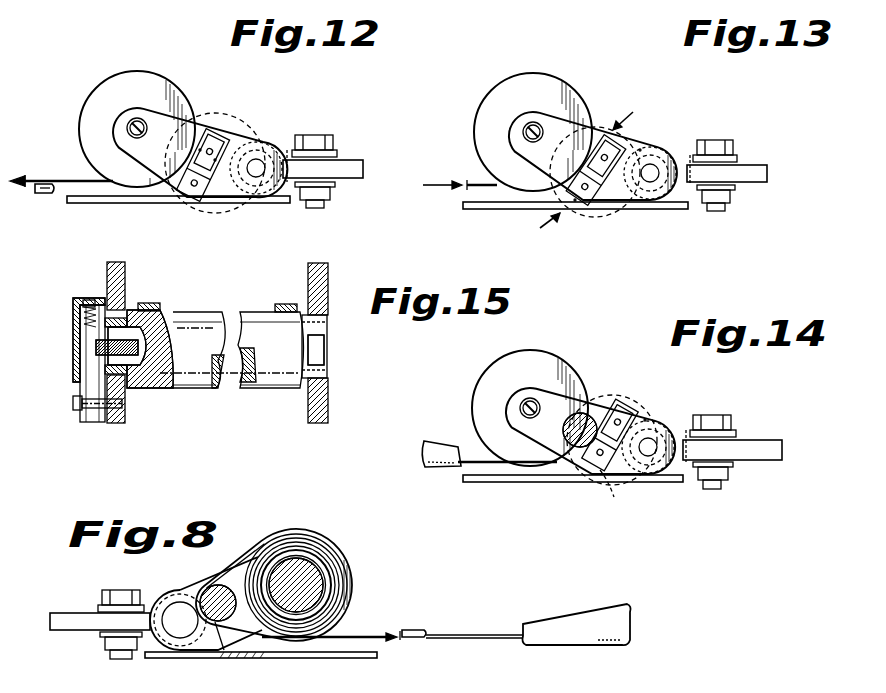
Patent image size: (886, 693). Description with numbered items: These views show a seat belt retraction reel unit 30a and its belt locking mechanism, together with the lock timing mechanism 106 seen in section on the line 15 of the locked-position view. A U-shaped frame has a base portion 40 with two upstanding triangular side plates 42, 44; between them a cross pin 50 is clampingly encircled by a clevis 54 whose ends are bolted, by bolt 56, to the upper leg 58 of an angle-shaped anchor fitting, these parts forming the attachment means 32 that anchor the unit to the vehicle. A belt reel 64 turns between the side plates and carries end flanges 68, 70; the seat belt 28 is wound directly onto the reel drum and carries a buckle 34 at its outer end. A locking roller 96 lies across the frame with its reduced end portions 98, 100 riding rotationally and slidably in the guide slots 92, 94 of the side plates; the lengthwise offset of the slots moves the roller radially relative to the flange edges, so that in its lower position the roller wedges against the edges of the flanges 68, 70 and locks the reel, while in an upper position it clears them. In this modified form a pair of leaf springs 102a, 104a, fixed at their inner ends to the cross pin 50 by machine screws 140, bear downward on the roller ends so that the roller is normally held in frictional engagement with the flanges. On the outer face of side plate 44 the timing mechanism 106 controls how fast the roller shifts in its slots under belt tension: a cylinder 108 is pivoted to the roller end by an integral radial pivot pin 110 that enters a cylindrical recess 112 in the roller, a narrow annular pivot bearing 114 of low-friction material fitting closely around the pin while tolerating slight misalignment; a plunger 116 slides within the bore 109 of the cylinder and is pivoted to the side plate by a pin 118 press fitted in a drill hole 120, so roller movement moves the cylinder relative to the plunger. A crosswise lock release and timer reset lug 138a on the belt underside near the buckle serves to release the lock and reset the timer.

In FIG. 13, the section line 15 is at (583, 164).
In FIG. 12, the seat belt 28 is at (70, 178).
In FIG. 13, the seat belt 28 is at (473, 183).
In FIG. 14, the seat belt 28 is at (475, 462).
In FIG. 8, the seat belt 28 is at (375, 634).
In FIG. 12, the retraction reel unit 30a is at (247, 107).
In FIG. 12, the attachment means 32 is at (340, 143).
In FIG. 13, the attachment means 32 is at (745, 155).
In FIG. 14, the attachment means 32 is at (750, 428).
In FIG. 14, the buckle 34 is at (440, 441).
In FIG. 8, the buckle 34 is at (622, 607).
In FIG. 12, the base portion 40 is at (133, 204).
In FIG. 13, the base portion 40 is at (503, 207).
In FIG. 14, the base portion 40 is at (503, 482).
In FIG. 8, the base portion 40 is at (330, 658).
In FIG. 15, the side plate 42 is at (340, 248).
In FIG. 8, the side plate 42 is at (255, 640).
In FIG. 15, the side plate 44 is at (130, 249).
In FIG. 12, the cross pin 50 is at (226, 200).
In FIG. 13, the cross pin 50 is at (650, 173).
In FIG. 14, the cross pin 50 is at (645, 482).
In FIG. 8, the clevis 54 is at (160, 612).
In FIG. 8, the bolt 56 is at (118, 590).
In FIG. 8, the upper leg 58 is at (78, 613).
In FIG. 12, the belt reel 64 is at (80, 100).
In FIG. 13, the belt reel 64 is at (520, 72).
In FIG. 14, the belt reel 64 is at (560, 334).
In FIG. 12, the end flange 68 is at (158, 106).
In FIG. 13, the end flange 68 is at (597, 66).
In FIG. 14, the end flange 68 is at (583, 373).
In FIG. 8, the end flange 70 is at (352, 552).
In FIG. 15, the guide slot 92 is at (328, 367).
In FIG. 12, the guide slot 94 is at (200, 190).
In FIG. 13, the guide slot 94 is at (596, 170).
In FIG. 15, the guide slot 94 is at (128, 305).
In FIG. 14, the guide slot 94 is at (610, 435).
In FIG. 12, the locking roller 96 is at (205, 115).
In FIG. 13, the locking roller 96 is at (602, 206).
In FIG. 15, the locking roller 96 is at (245, 305).
In FIG. 14, the locking roller 96 is at (605, 397).
In FIG. 8, the locking roller 96 is at (222, 587).
In FIG. 15, the end portion 98 is at (128, 318).
In FIG. 15, the end portion 100 is at (326, 322).
In FIG. 15, the leaf spring 102a is at (160, 307).
In FIG. 12, the leaf spring 104a is at (233, 147).
In FIG. 13, the leaf spring 104a is at (650, 128).
In FIG. 15, the leaf spring 104a is at (292, 306).
In FIG. 14, the leaf spring 104a is at (653, 403).
In FIG. 15, the timing mechanism 106 is at (72, 375).
In FIG. 15, the cylinder 108 is at (75, 348).
In FIG. 15, the bore 109 is at (83, 334).
In FIG. 15, the pivot pin 110 is at (172, 327).
In FIG. 15, the cylindrical recess 112 is at (172, 345).
In FIG. 15, the pivot bearing 114 is at (172, 365).
In FIG. 15, the plunger 116 is at (73, 397).
In FIG. 15, the pin 118 is at (103, 408).
In FIG. 15, the drill hole 120 is at (97, 298).
In FIG. 12, the lock release and timer reset lug 138a is at (52, 192).
In FIG. 13, the lock release and timer reset lug 138a is at (567, 207).
In FIG. 14, the lock release and timer reset lug 138a is at (575, 470).
In FIG. 14, the machine screw 140 is at (614, 497).